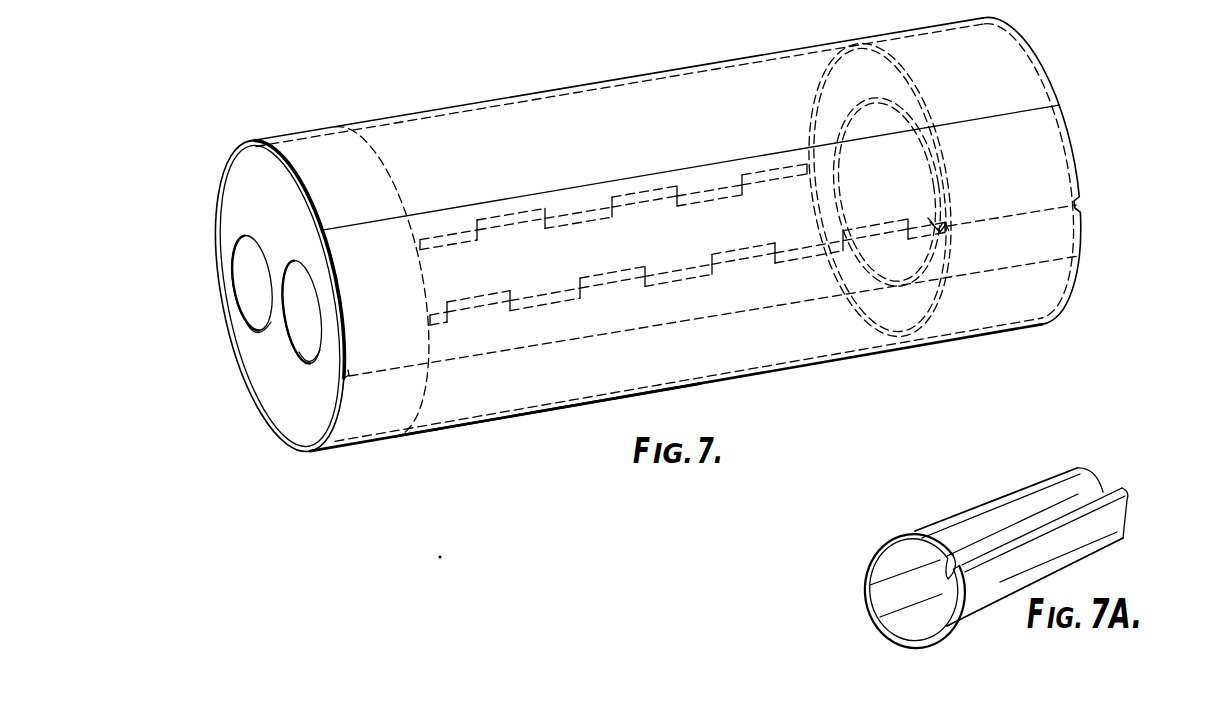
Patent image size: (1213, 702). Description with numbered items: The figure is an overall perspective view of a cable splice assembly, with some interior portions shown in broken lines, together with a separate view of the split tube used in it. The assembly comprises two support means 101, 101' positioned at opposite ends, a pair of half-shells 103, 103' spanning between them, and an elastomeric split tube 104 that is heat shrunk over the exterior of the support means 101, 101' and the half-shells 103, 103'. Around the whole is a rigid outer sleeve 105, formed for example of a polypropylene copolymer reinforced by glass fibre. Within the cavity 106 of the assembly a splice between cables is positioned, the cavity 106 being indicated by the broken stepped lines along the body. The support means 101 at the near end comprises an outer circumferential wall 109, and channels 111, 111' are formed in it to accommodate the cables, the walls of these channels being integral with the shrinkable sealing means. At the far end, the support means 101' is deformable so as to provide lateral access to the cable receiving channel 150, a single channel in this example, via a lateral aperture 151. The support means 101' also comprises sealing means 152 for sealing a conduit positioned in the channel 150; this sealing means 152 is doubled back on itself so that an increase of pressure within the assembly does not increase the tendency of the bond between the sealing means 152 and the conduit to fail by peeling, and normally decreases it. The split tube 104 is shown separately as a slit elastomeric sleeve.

In FIG. 7, the support means 101 is at (626, 240).
In FIG. 7, the support means 101' is at (1042, 170).
In FIG. 7, the half-shell 103 is at (620, 85).
In FIG. 7, the half-shell 103' is at (688, 379).
In FIG. 7, the elastomeric split tube 104 is at (362, 458).
In FIG. 7A, the elastomeric split tube 104 is at (1074, 548).
In FIG. 7, the rigid outer sleeve 105 is at (540, 412).
In FIG. 7, the cavity 106 is at (668, 158).
In FIG. 7, the outer circumferential wall 109 is at (360, 173).
In FIG. 7, the channel 111 is at (280, 359).
In FIG. 7, the channel 111' is at (240, 329).
In FIG. 7, the cable receiving channel 150 is at (873, 183).
In FIG. 7, the lateral aperture 151 is at (947, 218).
In FIG. 7, the sealing means 152 is at (888, 113).